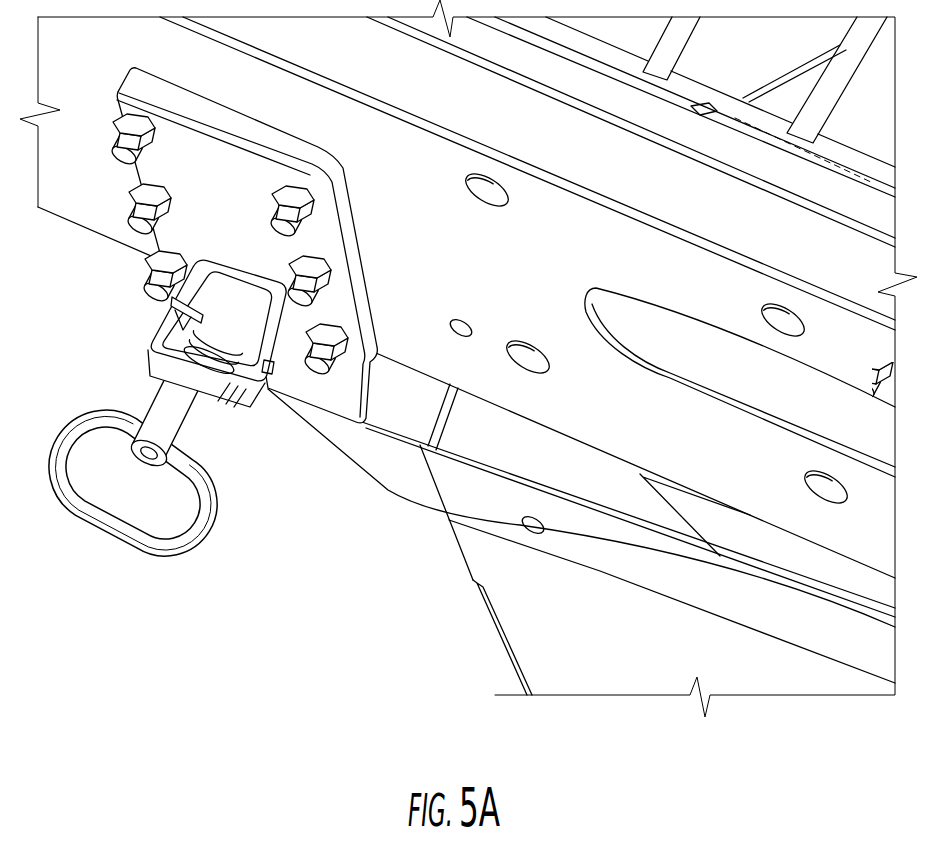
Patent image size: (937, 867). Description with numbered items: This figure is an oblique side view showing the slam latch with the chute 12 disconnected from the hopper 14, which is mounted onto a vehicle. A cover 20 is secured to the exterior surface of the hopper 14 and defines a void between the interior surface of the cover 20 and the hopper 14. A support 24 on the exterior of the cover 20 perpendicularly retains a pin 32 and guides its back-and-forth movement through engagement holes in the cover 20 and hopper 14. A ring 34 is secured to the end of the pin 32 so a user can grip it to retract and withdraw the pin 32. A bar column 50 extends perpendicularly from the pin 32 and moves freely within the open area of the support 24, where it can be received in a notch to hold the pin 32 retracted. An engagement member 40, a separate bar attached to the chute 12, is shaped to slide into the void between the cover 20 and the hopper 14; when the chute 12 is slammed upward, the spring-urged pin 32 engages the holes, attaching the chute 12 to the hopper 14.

The chute 12 is at (505, 637).
The hopper 14 is at (80, 224).
The cover 20 is at (313, 236).
The support 24 is at (238, 418).
The pin 32 is at (150, 457).
The ring 34 is at (146, 547).
The engagement member 40 is at (427, 494).
The bar column 50 is at (170, 302).